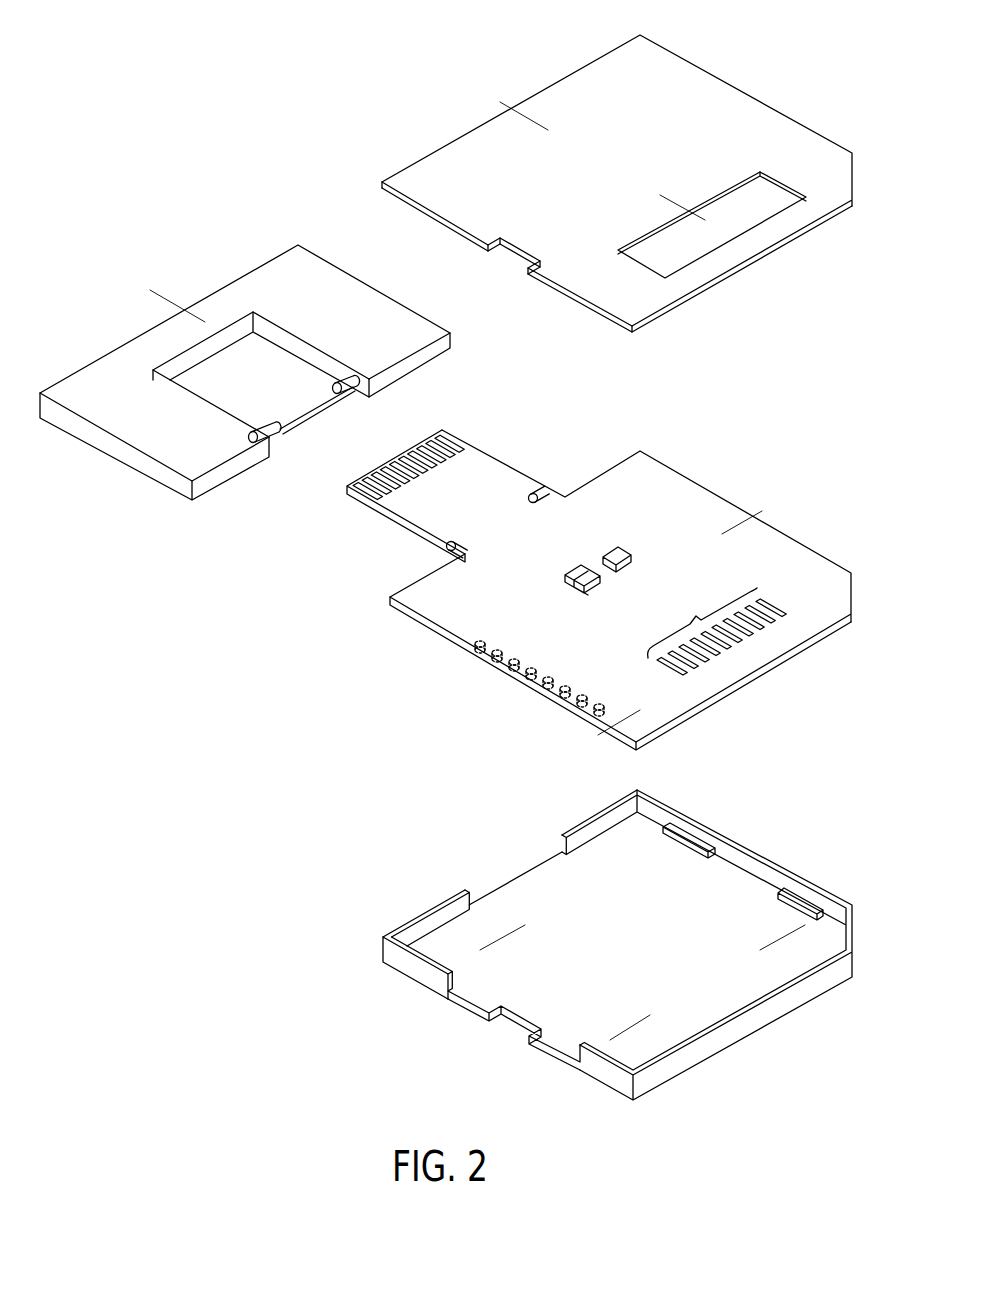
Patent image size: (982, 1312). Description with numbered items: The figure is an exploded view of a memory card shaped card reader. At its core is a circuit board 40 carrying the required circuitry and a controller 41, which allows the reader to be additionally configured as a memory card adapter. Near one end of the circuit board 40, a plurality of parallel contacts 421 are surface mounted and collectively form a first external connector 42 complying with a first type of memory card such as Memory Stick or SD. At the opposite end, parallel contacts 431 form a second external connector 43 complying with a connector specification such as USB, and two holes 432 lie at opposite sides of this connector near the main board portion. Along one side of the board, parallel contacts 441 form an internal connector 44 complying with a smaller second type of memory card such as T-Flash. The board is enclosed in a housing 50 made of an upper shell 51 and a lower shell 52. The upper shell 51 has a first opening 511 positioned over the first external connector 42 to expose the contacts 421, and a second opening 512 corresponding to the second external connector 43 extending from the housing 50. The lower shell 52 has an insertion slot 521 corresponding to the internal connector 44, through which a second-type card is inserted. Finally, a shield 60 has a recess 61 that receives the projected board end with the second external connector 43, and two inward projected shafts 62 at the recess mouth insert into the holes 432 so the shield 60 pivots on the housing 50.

The circuit board 40 is at (755, 643).
The controller 41 is at (623, 548).
The first external connector 42 is at (702, 623).
The contacts 421 is at (770, 607).
The second external connector 43 is at (445, 417).
The contacts 431 is at (453, 443).
The holes 432 is at (445, 547).
The internal connector 44 is at (587, 732).
The contacts 441 is at (478, 649).
The housing 50 is at (497, 97).
The upper shell 51 is at (692, 83).
The first opening 511 is at (760, 205).
The second opening 512 is at (495, 875).
The lower shell 52 is at (722, 1040).
The insertion slot 521 is at (465, 988).
The shield 60 is at (133, 458).
The recess 61 is at (220, 363).
The inward projected shafts 62 is at (350, 391).